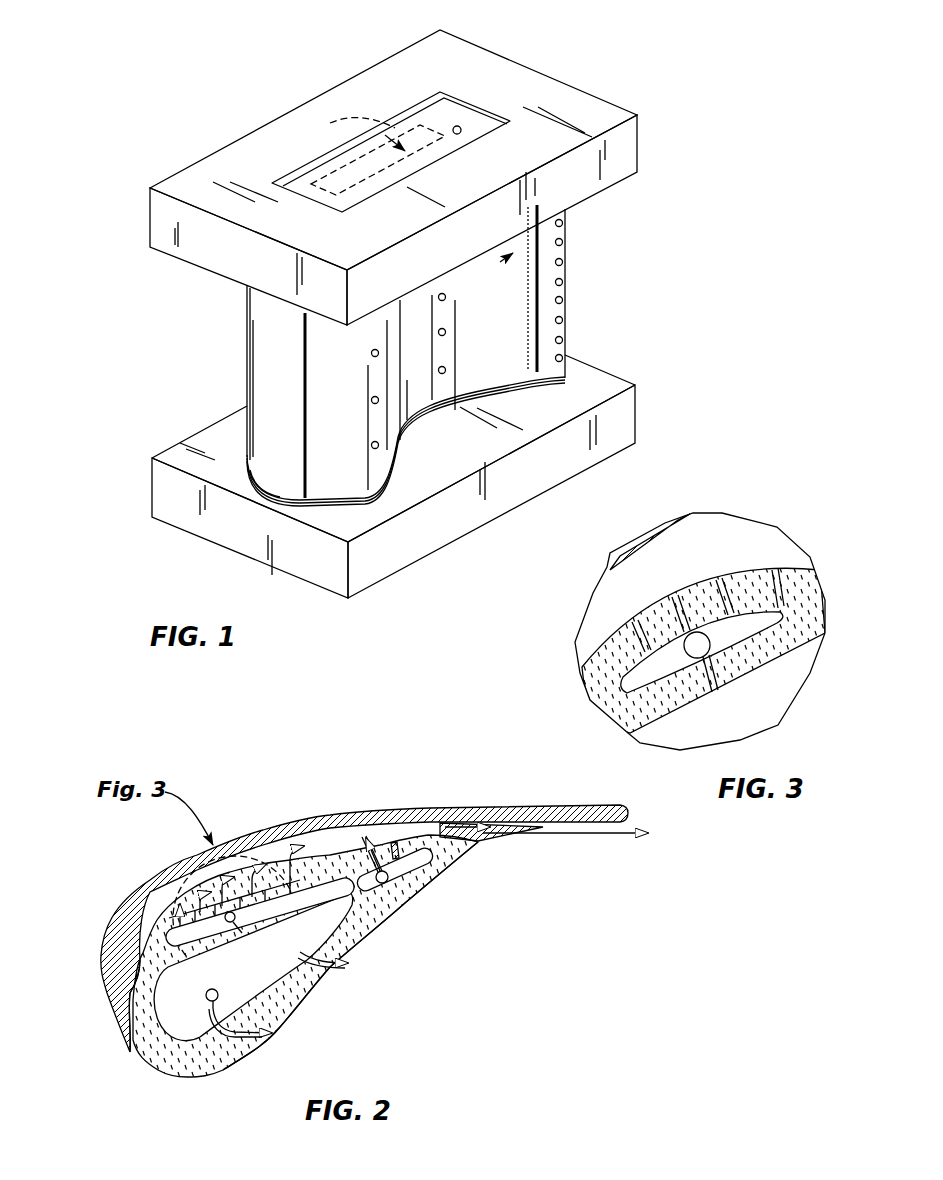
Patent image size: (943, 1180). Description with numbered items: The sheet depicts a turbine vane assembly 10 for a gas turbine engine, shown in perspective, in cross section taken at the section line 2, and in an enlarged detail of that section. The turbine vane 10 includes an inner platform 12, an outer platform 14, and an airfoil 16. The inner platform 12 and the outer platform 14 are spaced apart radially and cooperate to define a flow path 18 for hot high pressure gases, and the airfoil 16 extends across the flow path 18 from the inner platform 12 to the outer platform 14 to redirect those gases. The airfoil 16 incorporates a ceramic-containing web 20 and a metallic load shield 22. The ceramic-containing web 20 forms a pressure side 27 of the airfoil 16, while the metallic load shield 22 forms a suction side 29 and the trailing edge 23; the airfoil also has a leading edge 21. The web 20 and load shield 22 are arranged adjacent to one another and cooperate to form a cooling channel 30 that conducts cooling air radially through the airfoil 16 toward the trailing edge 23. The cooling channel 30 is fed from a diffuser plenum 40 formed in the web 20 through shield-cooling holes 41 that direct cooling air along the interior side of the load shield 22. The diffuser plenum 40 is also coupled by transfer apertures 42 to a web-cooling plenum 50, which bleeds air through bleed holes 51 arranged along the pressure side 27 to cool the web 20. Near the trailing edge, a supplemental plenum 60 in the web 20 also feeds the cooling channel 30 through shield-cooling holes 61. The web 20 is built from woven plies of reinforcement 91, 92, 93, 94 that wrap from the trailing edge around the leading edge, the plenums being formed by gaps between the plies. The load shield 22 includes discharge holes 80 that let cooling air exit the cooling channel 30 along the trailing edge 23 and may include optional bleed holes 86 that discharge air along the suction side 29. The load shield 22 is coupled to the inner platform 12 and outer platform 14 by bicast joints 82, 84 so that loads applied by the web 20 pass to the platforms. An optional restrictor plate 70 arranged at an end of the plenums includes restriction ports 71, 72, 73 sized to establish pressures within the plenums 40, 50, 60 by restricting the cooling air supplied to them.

In FIG. 1, the turbine vane assembly 10 is at (208, 92).
In FIG. 1, the inner platform 12 is at (630, 424).
In FIG. 1, the outer platform 14 is at (552, 80).
In FIG. 1, the airfoil 16 is at (243, 330).
In FIG. 2, the airfoil 16 is at (100, 877).
In FIG. 1, the flow path 18 is at (168, 388).
In FIG. 1, the ceramic-containing web 20 is at (343, 473).
In FIG. 3, the ceramic-containing web 20 is at (828, 608).
In FIG. 2, the ceramic-containing web 20 is at (187, 1077).
In FIG. 1, the leading edge 21 is at (277, 368).
In FIG. 2, the leading edge 21 is at (120, 1043).
In FIG. 1, the metallic load shield 22 is at (278, 462).
In FIG. 3, the metallic load shield 22 is at (680, 520).
In FIG. 2, the metallic load shield 22 is at (93, 998).
In FIG. 1, the trailing edge 23 is at (566, 333).
In FIG. 2, the trailing edge 23 is at (625, 812).
In FIG. 1, the pressure side 27 is at (413, 383).
In FIG. 2, the pressure side 27 is at (405, 900).
In FIG. 1, the suction side 29 is at (245, 300).
In FIG. 2, the suction side 29 is at (335, 808).
In FIG. 3, the cooling channel 30 is at (750, 542).
In FIG. 2, the cooling channel 30 is at (143, 920).
In FIG. 3, the diffuser plenum 40 is at (760, 616).
In FIG. 2, the diffuser plenum 40 is at (190, 937).
In FIG. 2, the shield-cooling holes 41 is at (228, 880).
In FIG. 2, the transfer apertures 42 is at (256, 942).
In FIG. 3, the web-cooling plenum 50 is at (780, 685).
In FIG. 2, the web-cooling plenum 50 is at (256, 990).
In FIG. 1, the bleed holes 51 is at (447, 331).
In FIG. 2, the bleed holes 51 is at (272, 1040).
In FIG. 2, the supplemental plenum 60 is at (397, 845).
In FIG. 2, the shield-cooling holes 61 is at (367, 830).
In FIG. 1, the restrictor plate 70 is at (441, 110).
In FIG. 1, the restriction port 71 is at (383, 108).
In FIG. 1, the restriction port 72 is at (338, 152).
In FIG. 1, the restriction port 73 is at (462, 123).
In FIG. 1, the discharge holes 80 is at (562, 282).
In FIG. 2, the discharge holes 80 is at (527, 833).
In FIG. 1, the bicast joint 82 is at (556, 386).
In FIG. 1, the bicast joint 84 is at (540, 267).
In FIG. 2, the bleed holes 86 is at (170, 893).
In FIG. 3, the woven ply of reinforcement 91 is at (582, 690).
In FIG. 3, the woven ply of reinforcement 92 is at (598, 712).
In FIG. 3, the woven ply of reinforcement 93 is at (610, 717).
In FIG. 3, the woven ply of reinforcement 94 is at (645, 733).
In FIG. 1, the section line 2 is at (605, 265).